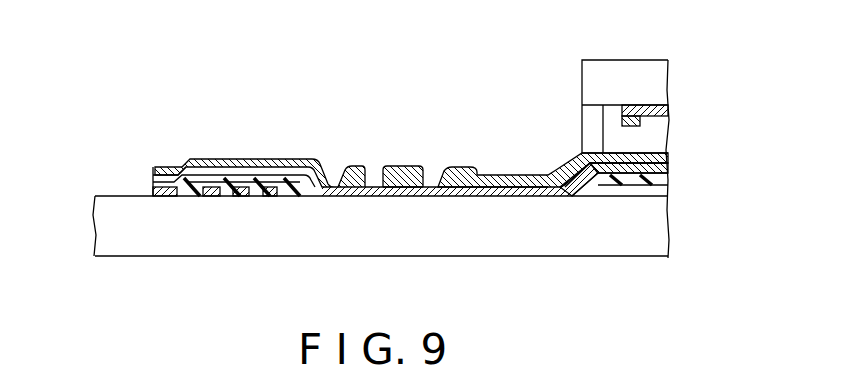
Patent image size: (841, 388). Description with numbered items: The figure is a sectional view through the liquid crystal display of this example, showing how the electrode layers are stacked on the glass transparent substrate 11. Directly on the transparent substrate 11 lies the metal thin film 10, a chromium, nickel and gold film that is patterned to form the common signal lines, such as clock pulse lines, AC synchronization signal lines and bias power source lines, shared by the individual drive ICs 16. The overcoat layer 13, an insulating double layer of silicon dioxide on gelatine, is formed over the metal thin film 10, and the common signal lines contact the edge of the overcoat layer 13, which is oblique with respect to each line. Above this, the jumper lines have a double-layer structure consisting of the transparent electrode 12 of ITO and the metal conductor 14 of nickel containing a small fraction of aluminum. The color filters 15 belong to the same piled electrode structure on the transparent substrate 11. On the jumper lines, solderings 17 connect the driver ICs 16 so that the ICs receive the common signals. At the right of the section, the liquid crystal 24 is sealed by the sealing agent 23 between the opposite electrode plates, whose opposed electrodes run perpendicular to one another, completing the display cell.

The metal thin film 10 is at (168, 197).
The transparent substrate 11 is at (650, 72).
The transparent electrode 12 is at (153, 182).
The overcoat layer 13 is at (666, 181).
The metal conductor 14 is at (222, 160).
The color filters 15 is at (656, 197).
The drive IC 16 is at (399, 167).
The soldering 17 is at (398, 197).
The sealing agent 23 is at (600, 112).
The liquid crystal 24 is at (655, 123).